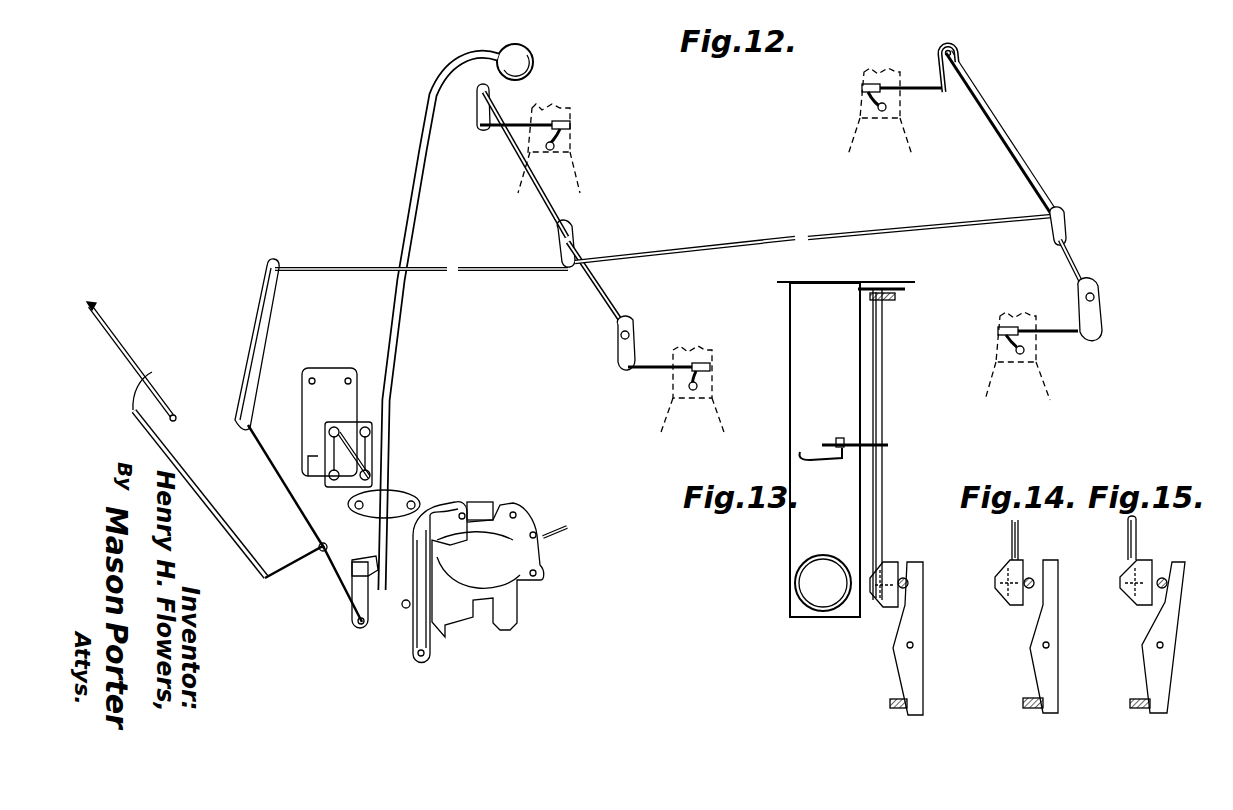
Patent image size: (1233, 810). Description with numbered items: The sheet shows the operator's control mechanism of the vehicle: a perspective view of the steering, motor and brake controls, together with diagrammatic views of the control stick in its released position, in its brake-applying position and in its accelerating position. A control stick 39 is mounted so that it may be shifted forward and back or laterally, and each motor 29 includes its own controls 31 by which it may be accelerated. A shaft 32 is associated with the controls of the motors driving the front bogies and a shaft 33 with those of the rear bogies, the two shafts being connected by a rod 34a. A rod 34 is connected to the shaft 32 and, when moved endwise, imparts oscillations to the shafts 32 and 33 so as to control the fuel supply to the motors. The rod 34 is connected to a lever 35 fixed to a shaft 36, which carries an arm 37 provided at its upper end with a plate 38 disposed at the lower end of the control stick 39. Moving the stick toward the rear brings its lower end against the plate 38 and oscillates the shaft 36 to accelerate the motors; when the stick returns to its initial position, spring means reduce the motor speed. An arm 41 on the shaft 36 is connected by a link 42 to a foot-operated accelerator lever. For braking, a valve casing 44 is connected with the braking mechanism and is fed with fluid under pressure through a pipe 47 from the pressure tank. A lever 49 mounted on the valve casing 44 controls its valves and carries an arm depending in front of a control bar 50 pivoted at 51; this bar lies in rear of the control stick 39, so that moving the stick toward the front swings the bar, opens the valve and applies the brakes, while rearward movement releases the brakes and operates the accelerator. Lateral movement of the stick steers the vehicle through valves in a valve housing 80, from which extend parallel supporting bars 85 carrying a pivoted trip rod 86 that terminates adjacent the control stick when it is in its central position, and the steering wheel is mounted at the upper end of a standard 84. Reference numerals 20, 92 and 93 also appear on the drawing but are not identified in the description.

In FIG. 12, the bracket plate 20 is at (402, 492).
In FIG. 12, the motor 29 is at (438, 530).
In FIG. 12, the controls 31 is at (562, 150).
In FIG. 12, the shaft 32 is at (608, 298).
In FIG. 12, the shaft 33 is at (1075, 264).
In FIG. 12, the rod 34 is at (534, 272).
In FIG. 12, the rod 34a is at (768, 240).
In FIG. 12, the lever 35 is at (272, 302).
In FIG. 13, the lever 35 is at (886, 300).
In FIG. 12, the shaft 36 is at (266, 466).
In FIG. 13, the shaft 36 is at (883, 402).
In FIG. 14, the shaft 36 is at (1011, 534).
In FIG. 15, the shaft 36 is at (1127, 532).
In FIG. 12, the arm 37 is at (356, 610).
In FIG. 12, the plate 38 is at (360, 558).
In FIG. 13, the plate 38 is at (888, 605).
In FIG. 14, the plate 38 is at (1012, 596).
In FIG. 15, the plate 38 is at (1142, 596).
In FIG. 12, the control stick 39 is at (406, 352).
In FIG. 13, the control stick 39 is at (905, 578).
In FIG. 14, the control stick 39 is at (1031, 577).
In FIG. 15, the control stick 39 is at (1163, 577).
In FIG. 12, the arm 41 is at (288, 556).
In FIG. 13, the arm 41 is at (846, 442).
In FIG. 12, the link 42 is at (180, 460).
In FIG. 12, the valve casing 44 is at (508, 553).
In FIG. 12, the pipe 47 is at (548, 532).
In FIG. 13, the lever 49 is at (890, 703).
In FIG. 14, the lever 49 is at (1023, 703).
In FIG. 15, the lever 49 is at (1130, 703).
In FIG. 12, the control bar 50 is at (432, 622).
In FIG. 13, the control bar 50 is at (916, 676).
In FIG. 14, the control bar 50 is at (1050, 678).
In FIG. 15, the control bar 50 is at (1160, 688).
In FIG. 12, the pivot 51 is at (402, 608).
In FIG. 13, the pivot 51 is at (913, 643).
In FIG. 14, the pivot 51 is at (1049, 644).
In FIG. 15, the pivot 51 is at (1163, 644).
In FIG. 12, the valve housing 80 is at (344, 400).
In FIG. 13, the standard 84 is at (796, 582).
In FIG. 12, the supporting bars 85 is at (355, 486).
In FIG. 12, the trip rod 86 is at (362, 458).
In FIG. 13, the hook 92 is at (806, 448).
In FIG. 12, the handle rod 93 is at (118, 342).